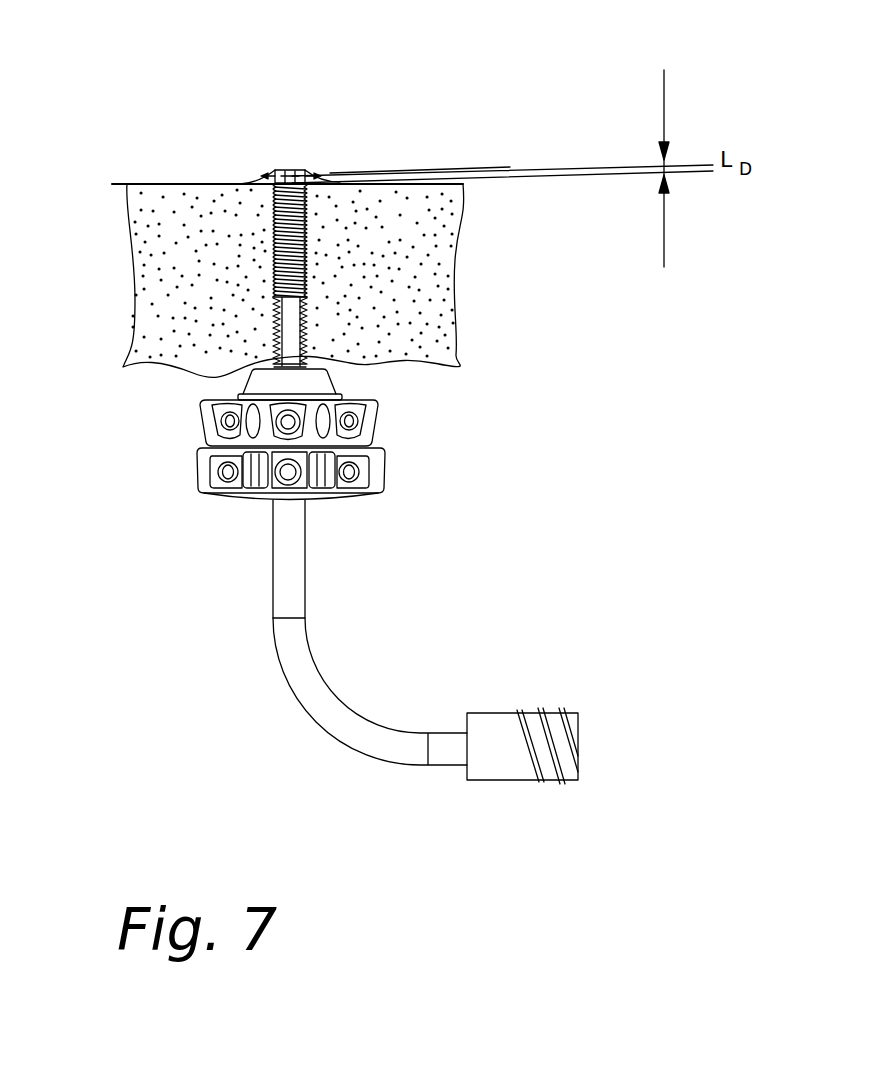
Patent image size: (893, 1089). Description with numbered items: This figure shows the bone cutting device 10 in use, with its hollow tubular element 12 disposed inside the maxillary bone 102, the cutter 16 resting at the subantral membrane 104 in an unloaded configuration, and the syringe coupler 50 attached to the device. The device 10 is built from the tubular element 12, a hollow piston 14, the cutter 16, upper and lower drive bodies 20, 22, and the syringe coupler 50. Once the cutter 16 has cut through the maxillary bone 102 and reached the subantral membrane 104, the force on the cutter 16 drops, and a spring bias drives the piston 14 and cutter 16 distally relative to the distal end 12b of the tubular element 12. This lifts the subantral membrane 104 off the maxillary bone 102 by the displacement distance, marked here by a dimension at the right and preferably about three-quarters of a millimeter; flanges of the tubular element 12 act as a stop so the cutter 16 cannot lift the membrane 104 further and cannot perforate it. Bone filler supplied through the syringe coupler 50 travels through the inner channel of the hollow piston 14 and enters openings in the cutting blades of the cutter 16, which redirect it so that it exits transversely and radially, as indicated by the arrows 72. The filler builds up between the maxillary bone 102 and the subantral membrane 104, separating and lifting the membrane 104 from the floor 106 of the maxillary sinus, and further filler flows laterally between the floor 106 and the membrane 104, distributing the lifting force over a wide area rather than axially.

The bone cutting device 10 is at (413, 472).
The hollow tubular element 12 is at (290, 325).
The distal end of the tubular element 12b is at (287, 170).
The hollow piston 14 is at (272, 188).
The cutter 16 is at (308, 168).
The upper drive body 20 is at (377, 424).
The lower drive body 22 is at (202, 468).
The syringe coupler 50 is at (328, 705).
The arrows 72 is at (262, 178).
The maxillary bone 102 is at (400, 258).
The subantral membrane 104 is at (121, 186).
The floor of the maxillary sinus 106 is at (402, 172).